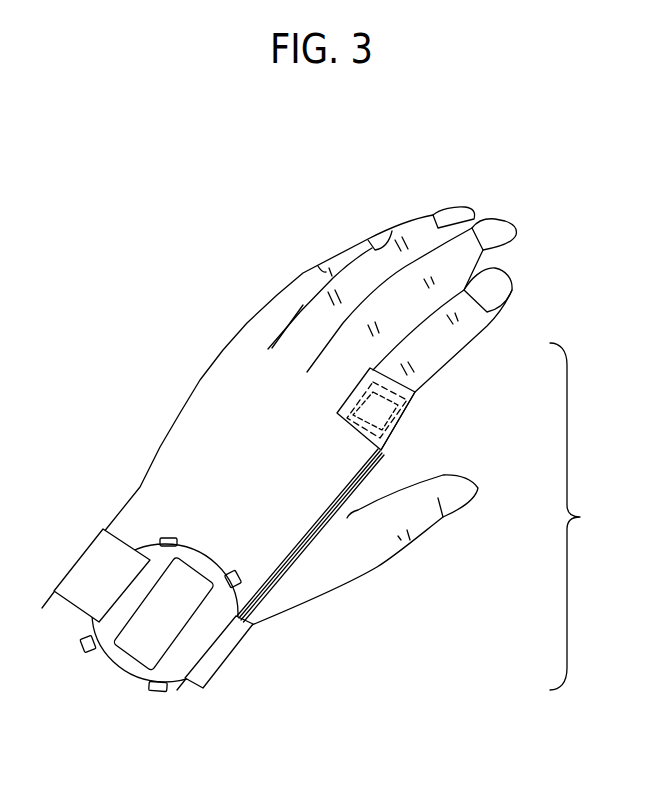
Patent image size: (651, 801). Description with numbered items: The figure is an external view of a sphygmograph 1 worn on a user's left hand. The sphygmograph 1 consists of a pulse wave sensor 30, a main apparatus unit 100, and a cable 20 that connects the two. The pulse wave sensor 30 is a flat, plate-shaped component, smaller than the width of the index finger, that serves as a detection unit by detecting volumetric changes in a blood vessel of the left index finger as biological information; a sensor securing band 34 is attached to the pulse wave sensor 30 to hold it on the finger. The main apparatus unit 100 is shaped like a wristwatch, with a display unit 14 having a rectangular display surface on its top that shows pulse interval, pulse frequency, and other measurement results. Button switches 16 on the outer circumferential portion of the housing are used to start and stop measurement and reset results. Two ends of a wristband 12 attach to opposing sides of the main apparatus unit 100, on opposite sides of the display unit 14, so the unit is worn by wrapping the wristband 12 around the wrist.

The sphygmograph 1 is at (576, 516).
The wristband 12 is at (133, 549).
The display unit 14 is at (126, 658).
The button switches 16 is at (174, 539).
The cable 20 is at (378, 462).
The pulse wave sensor 30 is at (384, 409).
The sensor securing band 34 is at (411, 393).
The main apparatus unit 100 is at (185, 678).